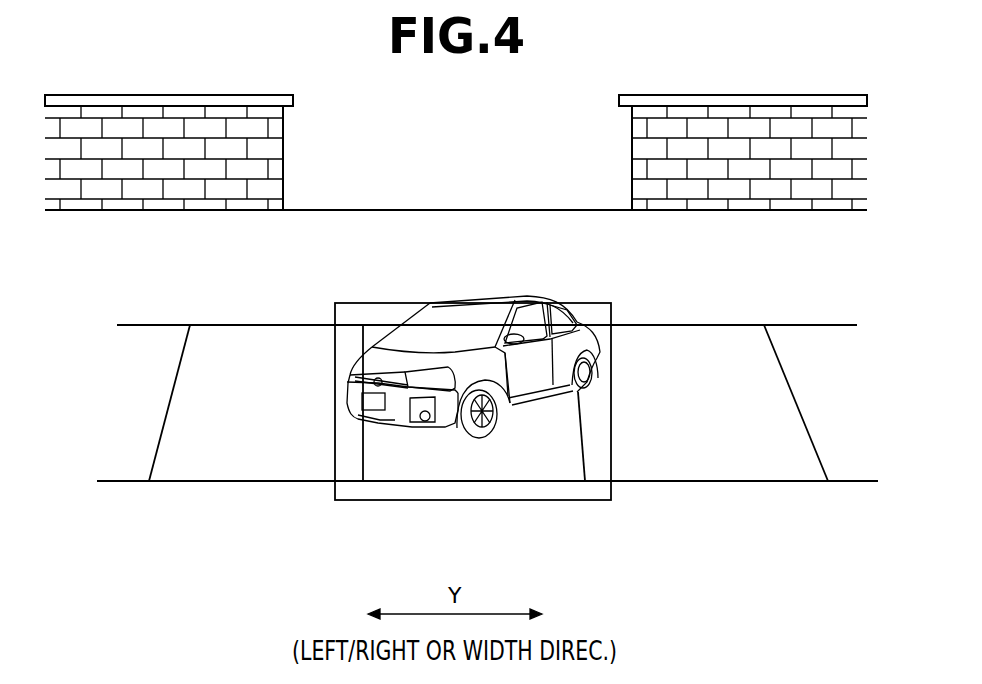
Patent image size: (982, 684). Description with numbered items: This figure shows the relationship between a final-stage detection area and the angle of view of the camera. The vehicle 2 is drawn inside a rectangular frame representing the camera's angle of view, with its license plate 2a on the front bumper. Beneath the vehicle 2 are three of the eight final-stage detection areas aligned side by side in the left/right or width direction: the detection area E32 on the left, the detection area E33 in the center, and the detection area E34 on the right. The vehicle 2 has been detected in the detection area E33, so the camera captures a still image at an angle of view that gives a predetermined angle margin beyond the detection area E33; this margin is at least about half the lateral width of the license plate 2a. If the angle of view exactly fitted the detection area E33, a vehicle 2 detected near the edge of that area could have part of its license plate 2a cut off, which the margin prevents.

The vehicle 2 is at (473, 357).
The license plate 2a is at (383, 422).
The detection area E32 is at (260, 481).
The detection area E33 is at (477, 482).
The detection area E34 is at (728, 481).